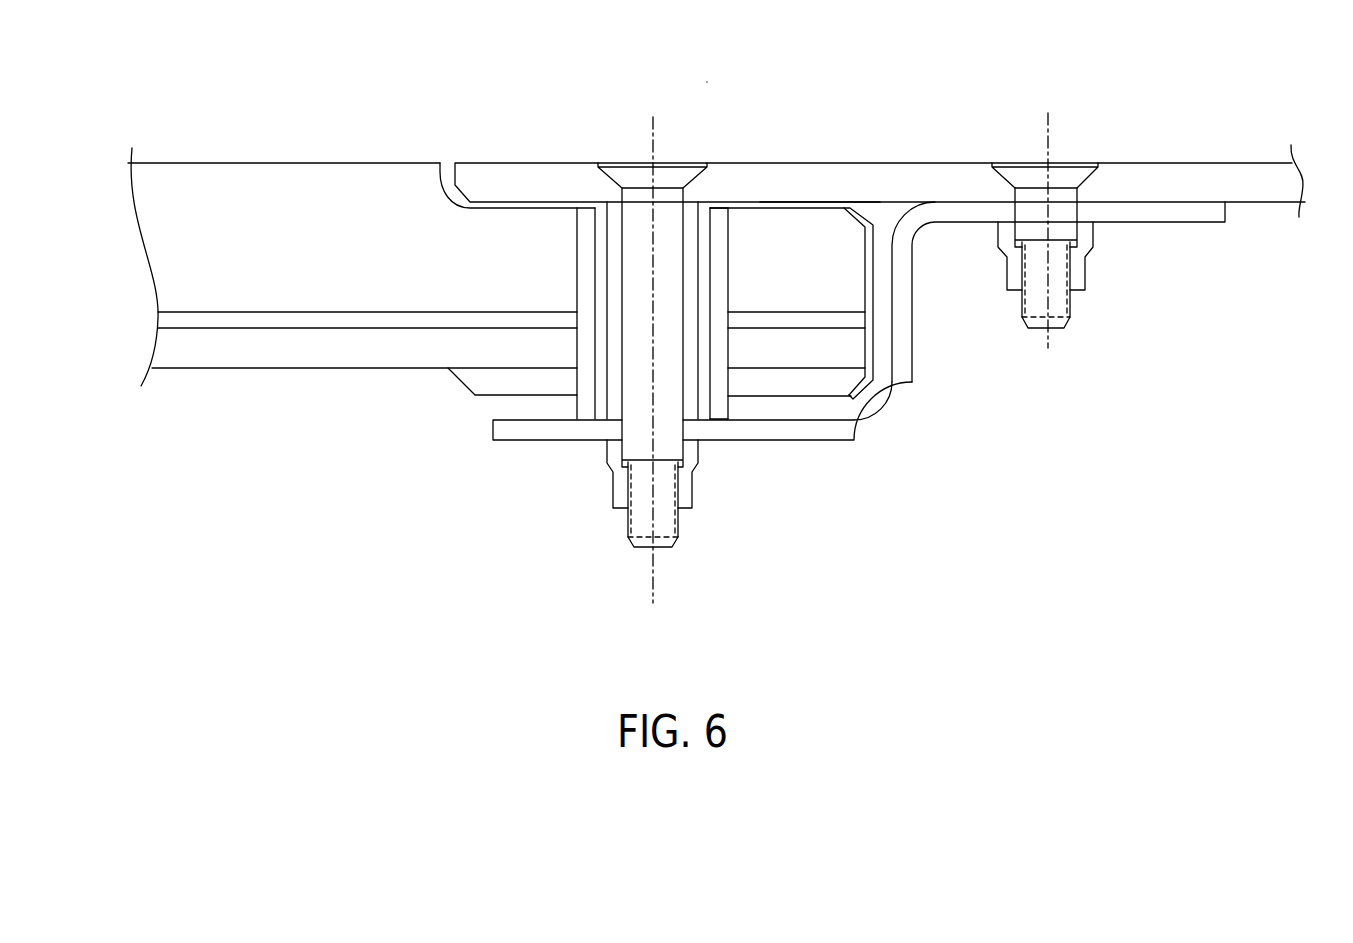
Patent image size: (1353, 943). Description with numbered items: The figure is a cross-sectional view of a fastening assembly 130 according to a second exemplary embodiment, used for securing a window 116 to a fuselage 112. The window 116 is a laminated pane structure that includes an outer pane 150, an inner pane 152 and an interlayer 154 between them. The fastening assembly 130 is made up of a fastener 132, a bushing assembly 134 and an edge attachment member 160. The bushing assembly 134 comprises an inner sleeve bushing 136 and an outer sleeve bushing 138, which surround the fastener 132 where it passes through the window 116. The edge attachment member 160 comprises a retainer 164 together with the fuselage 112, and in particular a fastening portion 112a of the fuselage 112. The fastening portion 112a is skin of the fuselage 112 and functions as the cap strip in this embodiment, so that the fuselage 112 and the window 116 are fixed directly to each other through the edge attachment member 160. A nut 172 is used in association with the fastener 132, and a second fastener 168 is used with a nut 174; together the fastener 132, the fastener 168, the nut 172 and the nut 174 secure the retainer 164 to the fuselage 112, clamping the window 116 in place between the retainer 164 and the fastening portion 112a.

The fastening assembly 130 is at (707, 82).
The fuselage 112 is at (890, 162).
The fastening portion 112a is at (807, 180).
The window 116 is at (243, 162).
The outer pane 150 is at (187, 183).
The inner pane 152 is at (212, 356).
The interlayer 154 is at (333, 321).
The fastener 132 is at (633, 213).
The bushing assembly 134 is at (680, 552).
The inner sleeve bushing 136 is at (700, 422).
The outer sleeve bushing 138 is at (725, 422).
The edge attachment member 160 is at (930, 313).
The retainer 164 is at (815, 450).
The fastener 168 is at (1060, 212).
The nut 172 is at (613, 452).
The nut 174 is at (1080, 273).